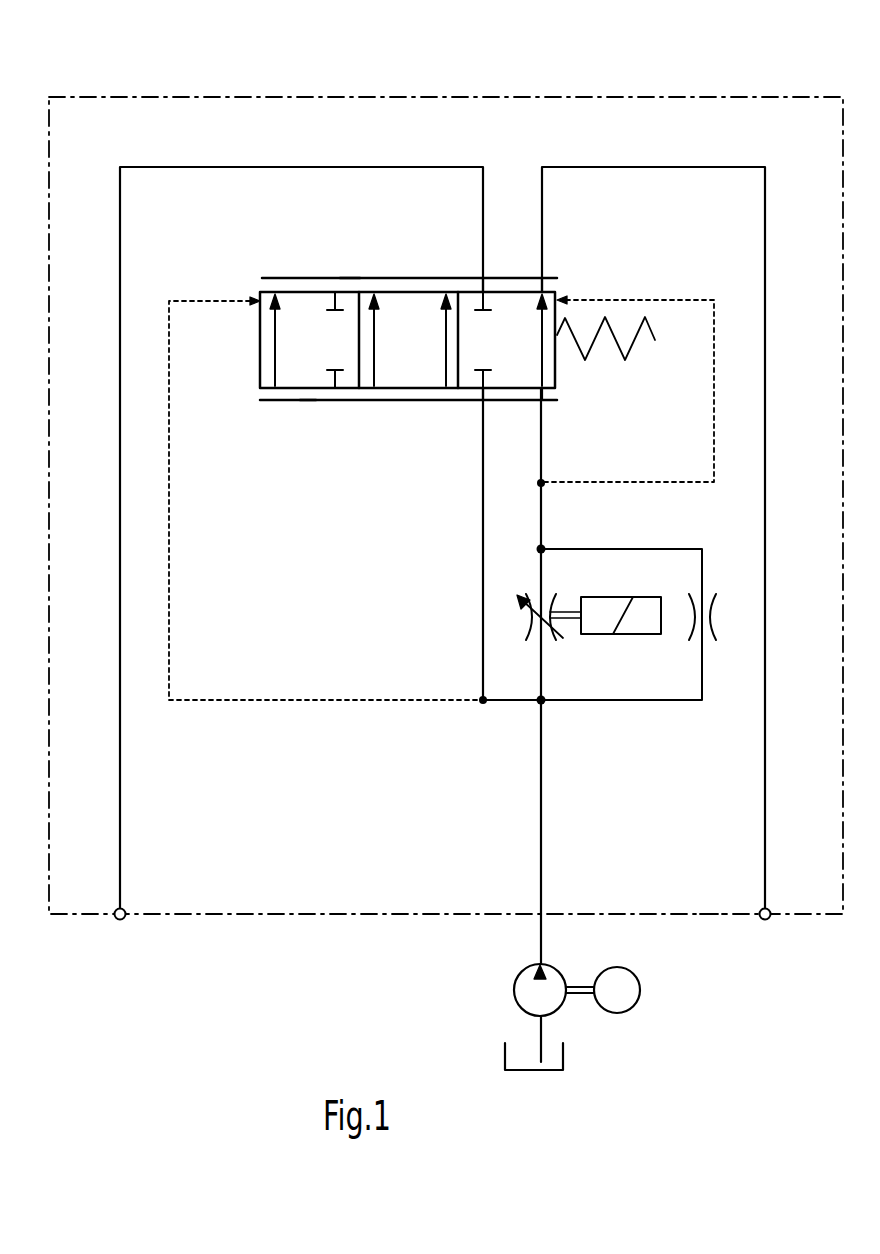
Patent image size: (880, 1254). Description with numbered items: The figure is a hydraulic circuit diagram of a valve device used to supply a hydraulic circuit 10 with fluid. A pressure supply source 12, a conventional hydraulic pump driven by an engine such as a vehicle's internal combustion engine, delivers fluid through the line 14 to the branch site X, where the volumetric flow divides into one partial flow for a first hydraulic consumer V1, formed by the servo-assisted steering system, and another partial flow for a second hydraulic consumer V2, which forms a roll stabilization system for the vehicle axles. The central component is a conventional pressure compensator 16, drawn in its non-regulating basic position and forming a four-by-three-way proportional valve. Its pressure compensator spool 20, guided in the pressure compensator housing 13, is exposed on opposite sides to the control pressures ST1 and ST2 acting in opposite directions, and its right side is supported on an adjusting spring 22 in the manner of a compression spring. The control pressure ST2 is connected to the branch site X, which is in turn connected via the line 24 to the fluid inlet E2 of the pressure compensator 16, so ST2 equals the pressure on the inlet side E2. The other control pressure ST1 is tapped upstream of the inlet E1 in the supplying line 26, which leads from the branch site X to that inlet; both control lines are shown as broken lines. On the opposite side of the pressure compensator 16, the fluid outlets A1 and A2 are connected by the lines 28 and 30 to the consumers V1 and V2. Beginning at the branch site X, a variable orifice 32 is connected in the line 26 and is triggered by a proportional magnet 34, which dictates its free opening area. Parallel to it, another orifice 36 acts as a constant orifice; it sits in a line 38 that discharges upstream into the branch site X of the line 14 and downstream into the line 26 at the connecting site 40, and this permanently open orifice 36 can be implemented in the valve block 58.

The hydraulic circuit 10 is at (633, 97).
The pressure supply source 12 is at (558, 968).
The pressure compensator housing 13 is at (350, 278).
The line 14 is at (541, 850).
The pressure compensator 16 is at (298, 279).
The pressure compensator spool 20 is at (308, 400).
The adjusting spring 22 is at (590, 355).
The line 24 is at (483, 583).
The supplying line 26 is at (541, 517).
The line 28 is at (765, 385).
The line 30 is at (122, 778).
The variable orifice 32 is at (548, 607).
The proportional magnet 34 is at (637, 622).
The other orifice 36 is at (711, 617).
The line 38 is at (672, 700).
The connecting site 40 is at (541, 549).
The valve block 58 is at (712, 914).
The fluid outlet A1 is at (543, 288).
The fluid outlet A2 is at (482, 278).
The fluid inlet E1 is at (545, 400).
The fluid inlet E2 is at (483, 400).
The control pressure ST1 is at (562, 298).
The control pressure ST2 is at (252, 300).
The hydraulic consumer V1 is at (770, 920).
The hydraulic consumer V2 is at (117, 921).
The branch site X is at (541, 700).